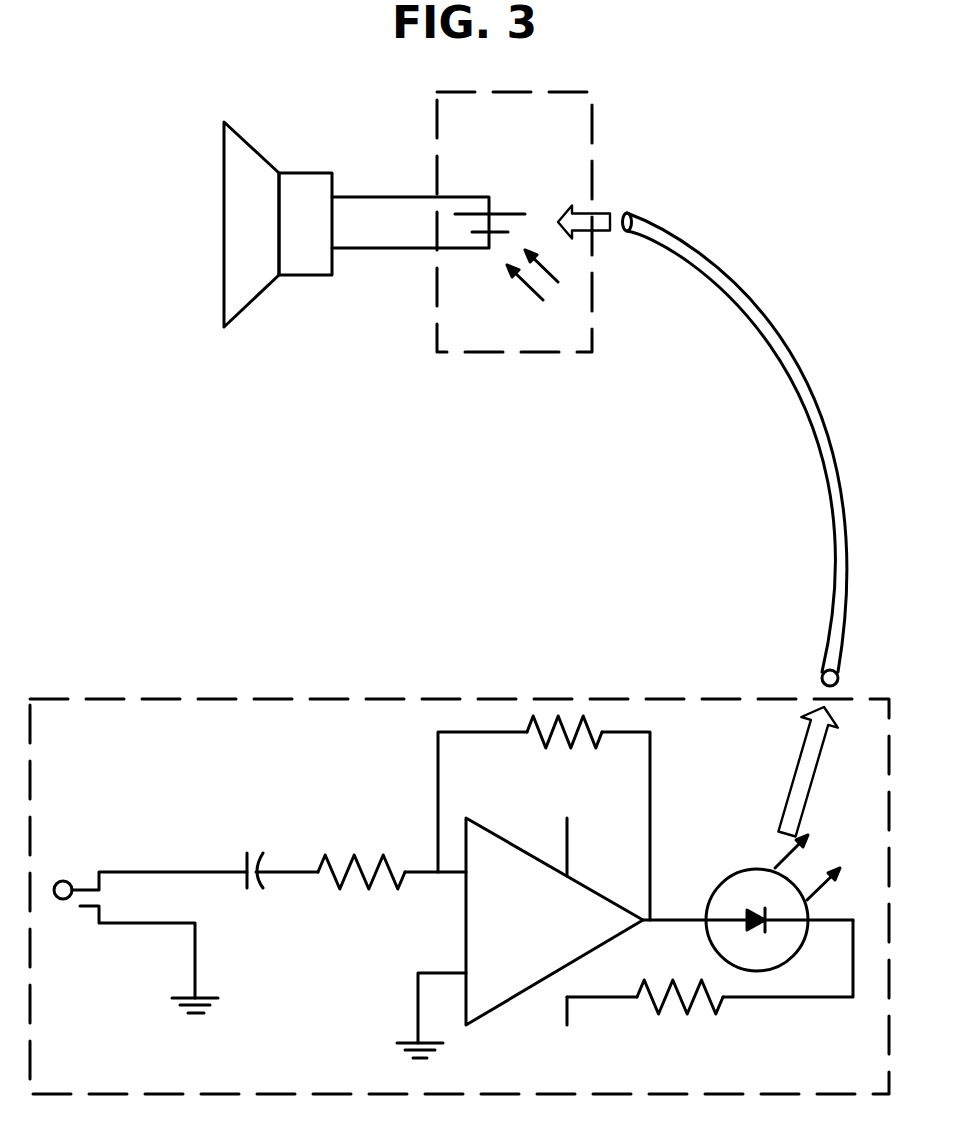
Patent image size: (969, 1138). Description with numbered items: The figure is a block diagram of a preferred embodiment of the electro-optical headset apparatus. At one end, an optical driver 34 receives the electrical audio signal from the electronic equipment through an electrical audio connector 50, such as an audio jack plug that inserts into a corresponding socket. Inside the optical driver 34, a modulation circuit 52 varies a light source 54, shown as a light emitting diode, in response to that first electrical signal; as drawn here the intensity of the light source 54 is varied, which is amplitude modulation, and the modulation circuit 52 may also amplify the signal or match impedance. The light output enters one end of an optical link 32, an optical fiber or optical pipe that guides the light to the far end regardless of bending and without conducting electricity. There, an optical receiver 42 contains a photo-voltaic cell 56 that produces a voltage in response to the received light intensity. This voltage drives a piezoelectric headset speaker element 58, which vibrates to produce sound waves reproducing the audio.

The optical link 32 is at (818, 427).
The optical driver 34 is at (305, 699).
The optical receiver 42 is at (592, 108).
The electrical audio connector 50 is at (133, 872).
The modulation circuit 52 is at (554, 926).
The light source 54 is at (763, 868).
The photo-voltaic cell 56 is at (515, 213).
The piezoelectric headset speaker element 58 is at (267, 160).